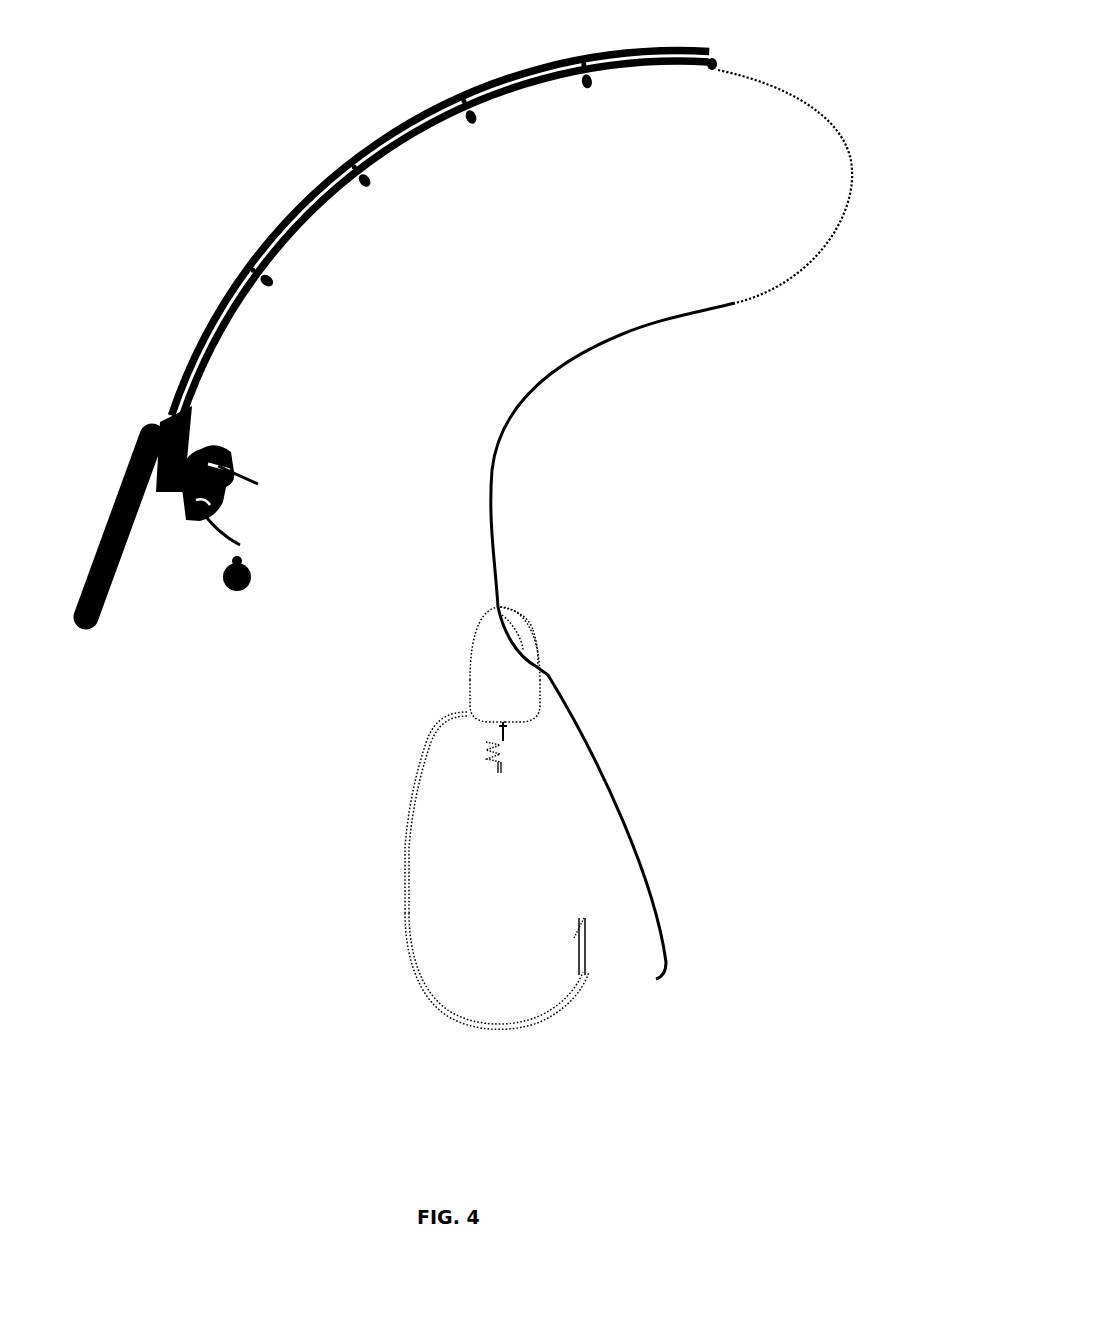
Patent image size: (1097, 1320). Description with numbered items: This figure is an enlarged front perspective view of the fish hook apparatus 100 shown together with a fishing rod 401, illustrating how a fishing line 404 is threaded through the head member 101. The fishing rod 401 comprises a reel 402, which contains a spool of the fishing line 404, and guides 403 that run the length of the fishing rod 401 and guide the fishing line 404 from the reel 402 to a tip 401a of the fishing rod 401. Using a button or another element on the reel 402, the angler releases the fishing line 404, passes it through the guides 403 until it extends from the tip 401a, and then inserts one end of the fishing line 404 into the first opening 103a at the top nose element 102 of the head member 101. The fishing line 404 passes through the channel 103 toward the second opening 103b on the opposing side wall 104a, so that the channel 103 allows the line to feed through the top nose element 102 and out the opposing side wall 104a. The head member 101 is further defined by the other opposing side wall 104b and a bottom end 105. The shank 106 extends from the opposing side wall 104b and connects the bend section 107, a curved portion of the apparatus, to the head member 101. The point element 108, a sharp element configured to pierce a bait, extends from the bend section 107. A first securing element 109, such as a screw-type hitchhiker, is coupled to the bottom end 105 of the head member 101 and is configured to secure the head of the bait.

The fish hook apparatus 100 is at (592, 508).
The head member 101 is at (550, 612).
The top nose element 102 is at (487, 614).
The channel 103 is at (503, 656).
The first opening 103a is at (508, 605).
The second opening 103b is at (535, 661).
The opposing side wall 104a is at (540, 700).
The opposing side wall 104b is at (470, 674).
The bottom end 105 is at (512, 727).
The shank 106 is at (403, 860).
The bend section 107 is at (443, 1011).
The point element 108 is at (584, 932).
The first securing element 109 is at (503, 763).
The fishing rod 401 is at (182, 331).
The tip 401a is at (717, 60).
The reel 402 is at (212, 448).
The guides 403 is at (712, 68).
The fishing line 404 is at (648, 317).